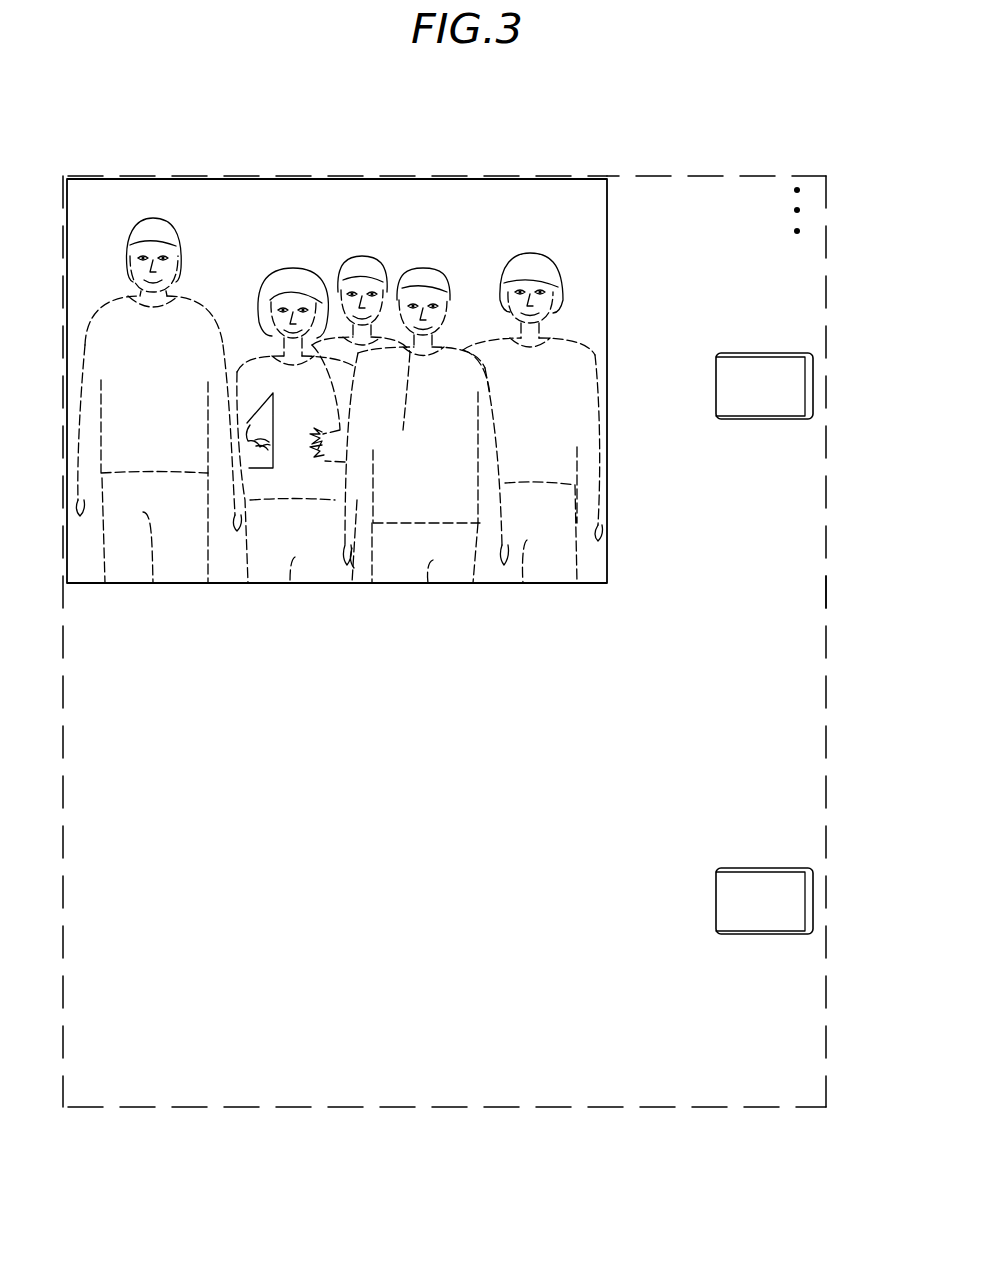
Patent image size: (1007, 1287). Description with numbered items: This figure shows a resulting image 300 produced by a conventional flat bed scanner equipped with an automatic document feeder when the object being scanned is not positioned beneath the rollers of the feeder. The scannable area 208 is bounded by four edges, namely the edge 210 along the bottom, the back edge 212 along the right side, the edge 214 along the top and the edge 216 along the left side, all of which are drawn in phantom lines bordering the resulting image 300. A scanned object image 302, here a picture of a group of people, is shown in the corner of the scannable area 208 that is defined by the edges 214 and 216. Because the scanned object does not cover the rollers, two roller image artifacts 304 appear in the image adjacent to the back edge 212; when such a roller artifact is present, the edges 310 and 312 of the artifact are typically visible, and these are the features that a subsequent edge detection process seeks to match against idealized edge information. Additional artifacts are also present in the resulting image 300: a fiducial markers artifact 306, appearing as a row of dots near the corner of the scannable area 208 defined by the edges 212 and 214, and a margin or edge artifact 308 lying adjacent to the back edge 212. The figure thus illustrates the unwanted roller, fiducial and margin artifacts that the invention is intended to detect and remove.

The resulting image 300 is at (521, 134).
The scanned object image 302 is at (307, 167).
The edge 214 is at (140, 175).
The scannable area 208 is at (665, 170).
The fiducial markers artifact 306 is at (803, 160).
The roller image artifacts 304 is at (728, 346).
The edge 310 is at (792, 352).
The edge 312 is at (776, 420).
The margin or edge artifact 308 is at (813, 565).
The back edge 212 is at (826, 650).
The edge 216 is at (64, 738).
The edge 210 is at (237, 1107).